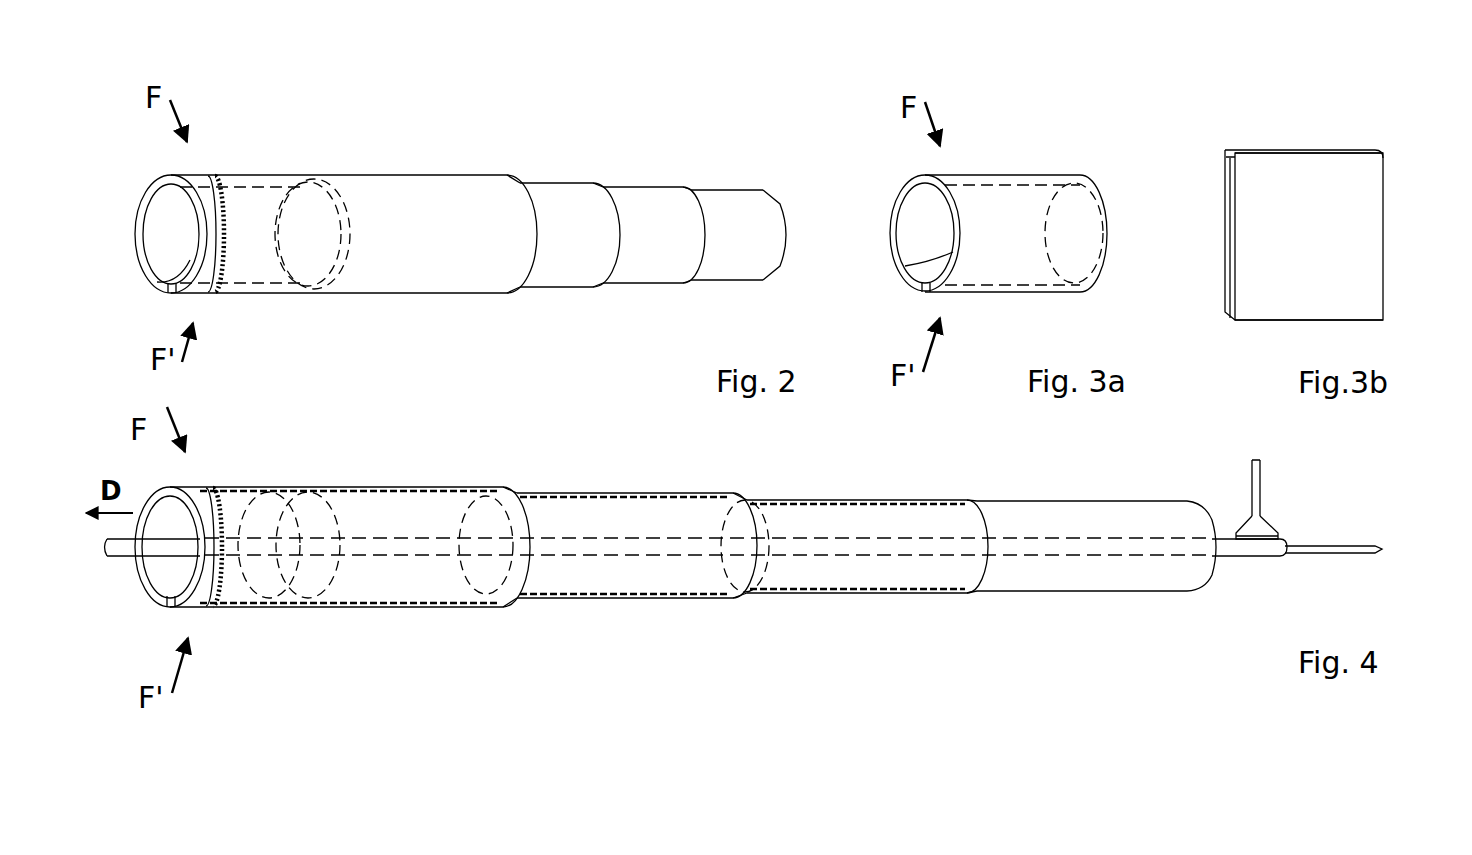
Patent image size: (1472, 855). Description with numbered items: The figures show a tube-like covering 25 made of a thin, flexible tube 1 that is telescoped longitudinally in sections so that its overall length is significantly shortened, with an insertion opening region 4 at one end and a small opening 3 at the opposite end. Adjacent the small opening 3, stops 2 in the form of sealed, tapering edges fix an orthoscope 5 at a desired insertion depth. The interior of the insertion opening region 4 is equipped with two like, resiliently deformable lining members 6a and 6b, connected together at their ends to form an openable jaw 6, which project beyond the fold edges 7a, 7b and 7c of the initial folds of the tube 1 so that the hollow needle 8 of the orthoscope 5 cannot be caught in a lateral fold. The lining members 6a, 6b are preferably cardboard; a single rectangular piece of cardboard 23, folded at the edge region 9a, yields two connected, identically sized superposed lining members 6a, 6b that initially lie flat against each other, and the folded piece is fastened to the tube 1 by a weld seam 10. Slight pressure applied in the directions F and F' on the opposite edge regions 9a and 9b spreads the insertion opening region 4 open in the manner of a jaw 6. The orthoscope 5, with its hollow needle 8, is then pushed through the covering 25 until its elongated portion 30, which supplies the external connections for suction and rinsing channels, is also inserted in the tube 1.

In FIG. 2, the thin, flexible tube 1 is at (442, 213).
In FIG. 4, the thin, flexible tube 1 is at (645, 572).
In FIG. 2, the stops 2 is at (747, 233).
In FIG. 4, the stops 2 is at (1200, 505).
In FIG. 2, the small opening 3 is at (792, 235).
In FIG. 2, the insertion opening region 4 is at (158, 238).
In FIG. 4, the orthoscope 5 is at (1266, 517).
In FIG. 3a, the jaw 6 is at (997, 168).
In FIG. 2, the lining member 6a is at (153, 193).
In FIG. 3a, the lining member 6a is at (902, 207).
In FIG. 3b, the lining member 6a is at (1225, 204).
In FIG. 4, the lining member 6a is at (170, 547).
In FIG. 2, the lining member 6b is at (157, 282).
In FIG. 3a, the lining member 6b is at (905, 266).
In FIG. 3b, the lining member 6b is at (1232, 276).
In FIG. 4, the lining member 6b is at (170, 547).
In FIG. 4, the fold edge 7a is at (421, 487).
In FIG. 4, the fold edge 7b is at (635, 493).
In FIG. 4, the fold edge 7c is at (861, 500).
In FIG. 4, the hollow needle 8 is at (1355, 544).
In FIG. 3b, the edge region 9a is at (1294, 150).
In FIG. 3b, the edge region 9b is at (1250, 322).
In FIG. 2, the weld seam 10 is at (220, 278).
In FIG. 4, the weld seam 10 is at (214, 547).
In FIG. 3b, the piece of cardboard 23 is at (1350, 230).
In FIG. 2, the tube-like covering 25 is at (517, 166).
In FIG. 4, the tube-like covering 25 is at (462, 478).
In FIG. 4, the elongated portion 30 is at (120, 556).